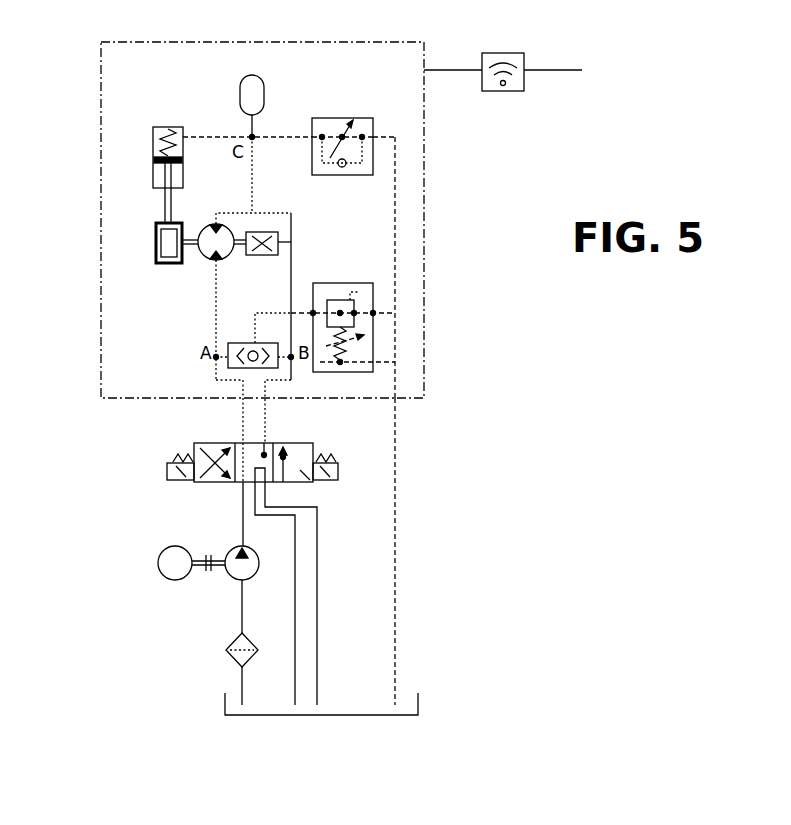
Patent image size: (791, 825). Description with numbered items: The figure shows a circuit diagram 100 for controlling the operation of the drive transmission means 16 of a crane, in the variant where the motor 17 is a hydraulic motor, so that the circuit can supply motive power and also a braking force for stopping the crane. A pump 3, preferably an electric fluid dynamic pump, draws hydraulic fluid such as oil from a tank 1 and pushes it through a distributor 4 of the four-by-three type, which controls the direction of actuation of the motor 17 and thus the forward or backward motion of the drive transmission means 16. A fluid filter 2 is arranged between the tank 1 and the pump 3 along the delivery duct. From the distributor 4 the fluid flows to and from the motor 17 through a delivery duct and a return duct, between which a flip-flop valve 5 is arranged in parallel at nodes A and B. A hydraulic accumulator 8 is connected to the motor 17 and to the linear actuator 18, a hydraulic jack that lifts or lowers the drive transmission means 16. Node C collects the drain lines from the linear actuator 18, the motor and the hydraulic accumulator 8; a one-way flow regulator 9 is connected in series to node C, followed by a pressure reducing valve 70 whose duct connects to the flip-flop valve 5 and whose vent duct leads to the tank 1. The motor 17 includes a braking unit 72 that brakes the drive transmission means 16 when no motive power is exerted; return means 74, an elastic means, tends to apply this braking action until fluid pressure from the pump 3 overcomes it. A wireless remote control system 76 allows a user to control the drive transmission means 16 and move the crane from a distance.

The tank 1 is at (218, 713).
The fluid filter 2 is at (222, 655).
The pump 3 is at (200, 585).
The distributor 4 is at (170, 455).
The flip-flop valve 5 is at (215, 371).
The hydraulic accumulator 8 is at (262, 85).
The one-way flow regulator 9 is at (358, 117).
The drive transmission means 16 is at (162, 257).
The motor 17 is at (190, 262).
The linear actuator 18 is at (160, 126).
The pressure reducing valve 70 is at (374, 336).
The braking unit 72 is at (266, 232).
The return means 74 is at (157, 232).
The wireless remote control system 76 is at (515, 72).
The circuit diagram 100 is at (426, 245).